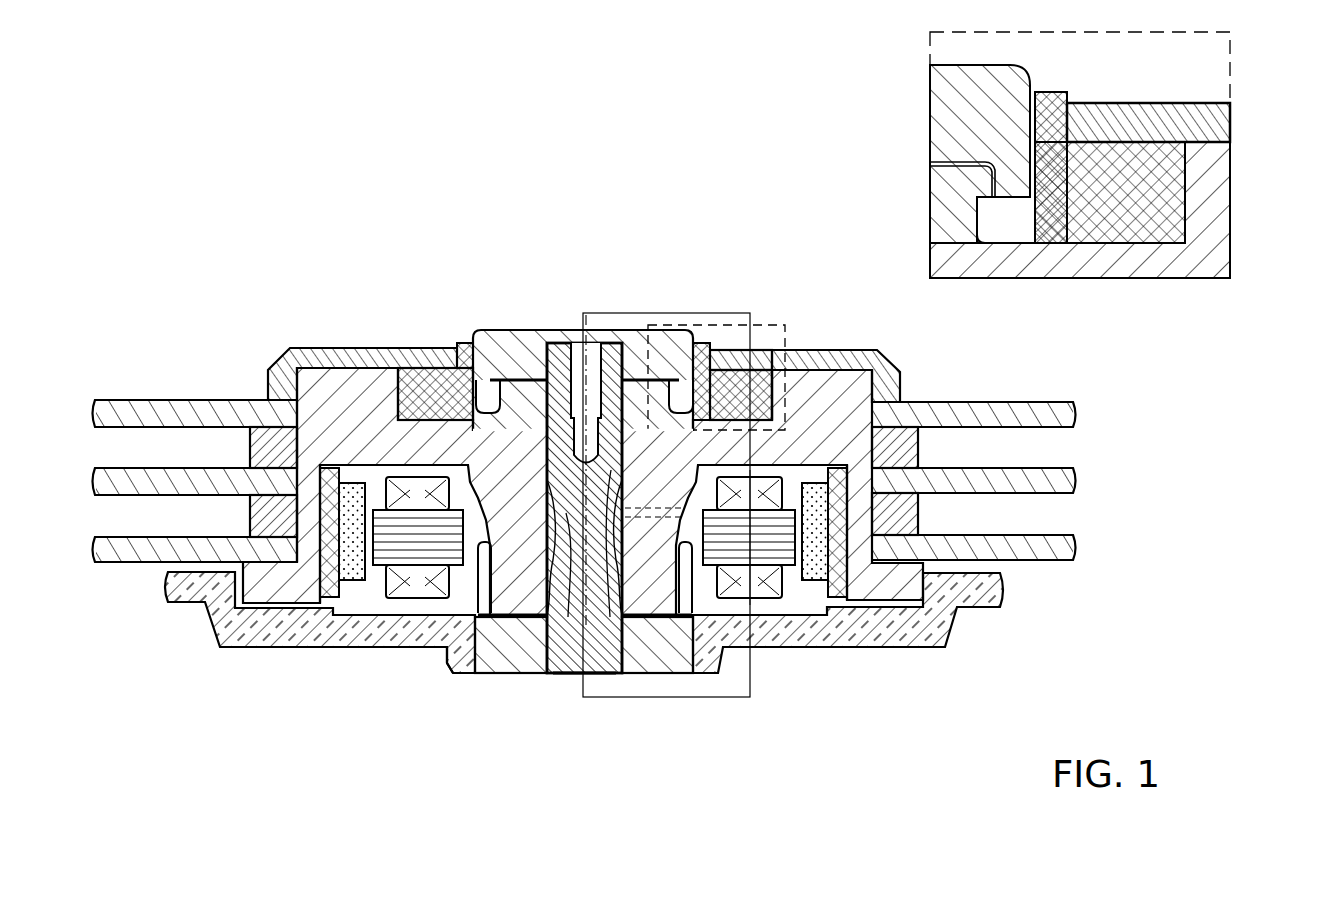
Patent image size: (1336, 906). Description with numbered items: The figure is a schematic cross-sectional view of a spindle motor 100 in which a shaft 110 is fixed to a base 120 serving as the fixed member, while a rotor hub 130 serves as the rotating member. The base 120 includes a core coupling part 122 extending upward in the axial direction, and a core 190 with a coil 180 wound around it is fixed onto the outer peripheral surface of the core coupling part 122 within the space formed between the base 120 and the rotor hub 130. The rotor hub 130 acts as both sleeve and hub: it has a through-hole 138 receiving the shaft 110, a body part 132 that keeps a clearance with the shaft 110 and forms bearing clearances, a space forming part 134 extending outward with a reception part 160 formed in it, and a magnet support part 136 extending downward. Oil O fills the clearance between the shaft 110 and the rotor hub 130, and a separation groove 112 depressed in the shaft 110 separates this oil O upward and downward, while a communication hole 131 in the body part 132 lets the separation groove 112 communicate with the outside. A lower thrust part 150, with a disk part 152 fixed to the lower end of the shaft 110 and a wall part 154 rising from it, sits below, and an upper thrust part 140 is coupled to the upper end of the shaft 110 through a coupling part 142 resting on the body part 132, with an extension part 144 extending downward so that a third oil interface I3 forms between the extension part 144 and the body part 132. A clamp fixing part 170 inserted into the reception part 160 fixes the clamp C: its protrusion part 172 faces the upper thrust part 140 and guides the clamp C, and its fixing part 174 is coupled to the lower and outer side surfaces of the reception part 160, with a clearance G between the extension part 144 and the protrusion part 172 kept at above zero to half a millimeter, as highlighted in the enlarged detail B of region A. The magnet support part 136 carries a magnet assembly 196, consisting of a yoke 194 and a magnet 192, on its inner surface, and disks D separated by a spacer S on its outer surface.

The spindle motor 100 is at (203, 126).
The shaft 110 is at (562, 420).
The separation groove 112 is at (588, 560).
The base 120 is at (347, 667).
The core coupling part 122 is at (435, 605).
The rotor hub 130 is at (363, 222).
The communication hole 131 is at (640, 520).
The body part 132 is at (390, 357).
The space forming part 134 is at (420, 440).
The magnet support part 136 is at (307, 500).
The through-hole 138 is at (583, 650).
The upper thrust part 140 is at (697, 250).
The coupling part 142 is at (640, 360).
The extension part 144 is at (680, 400).
The lower thrust part 150 is at (552, 676).
The disk part 152 is at (497, 647).
The wall part 154 is at (482, 610).
The reception part 160 is at (767, 387).
The clamp fixing part 170 is at (828, 300).
The protrusion part 172 is at (740, 352).
The fixing part 174 is at (773, 362).
The coil 180 is at (765, 590).
The core 190 is at (780, 553).
The magnet 192 is at (820, 553).
The yoke 194 is at (848, 537).
The magnet assembly 196 is at (968, 707).
The region A is at (727, 698).
The enlarged view direction B is at (787, 342).
The clamp C is at (870, 352).
The disks D is at (1032, 407).
The clearance G is at (1030, 80).
The third oil interface I3 is at (992, 218).
The oil O is at (528, 490).
The spacer S is at (913, 450).